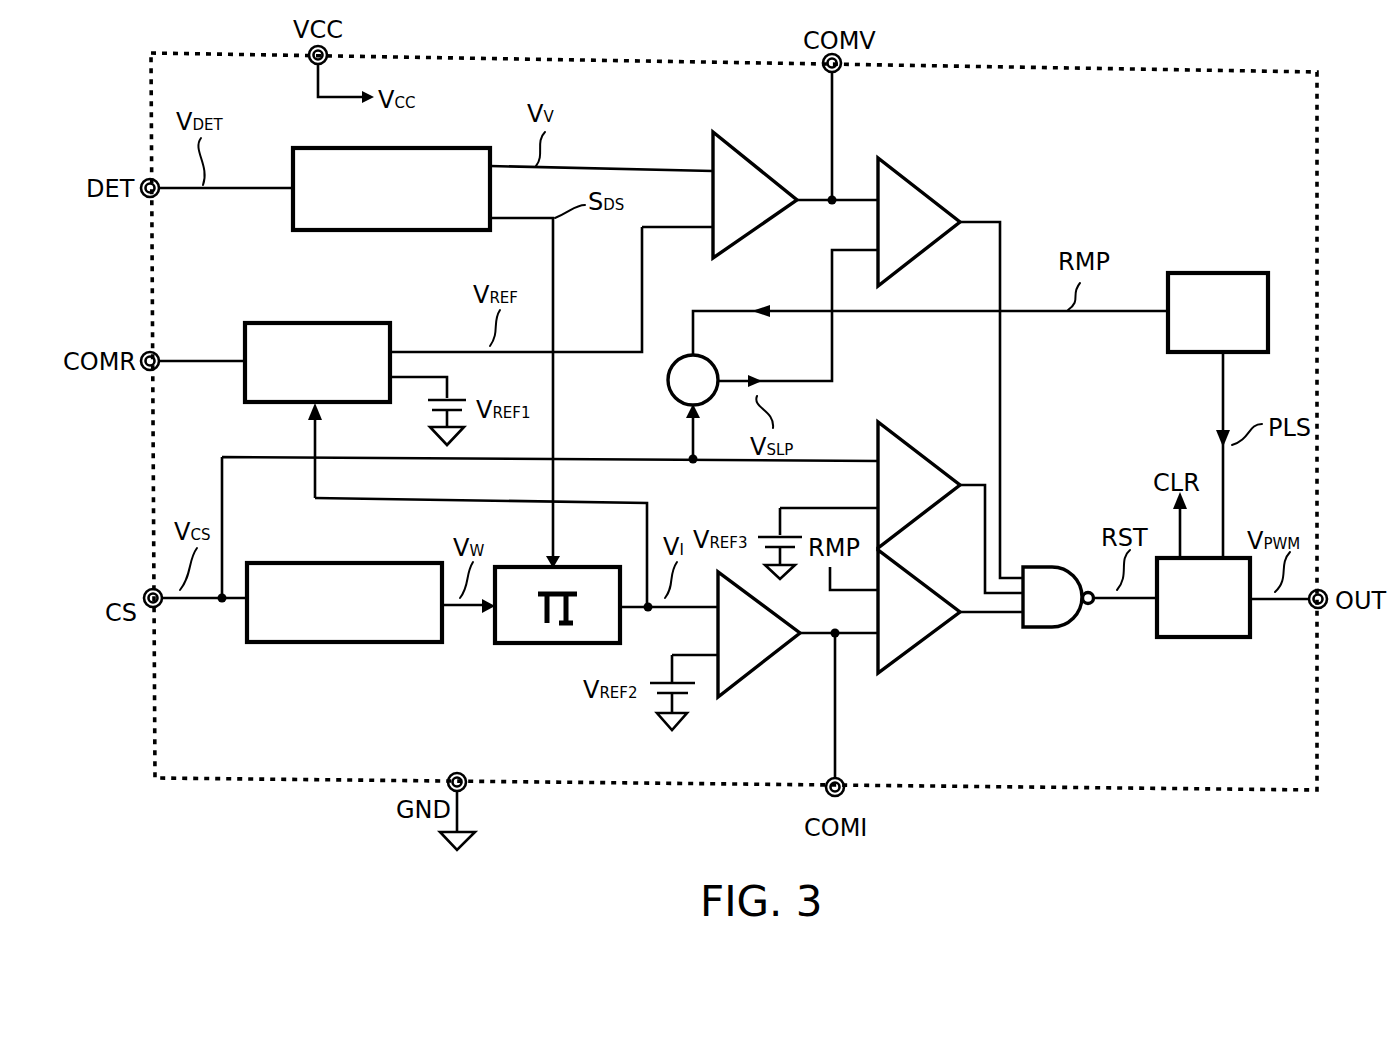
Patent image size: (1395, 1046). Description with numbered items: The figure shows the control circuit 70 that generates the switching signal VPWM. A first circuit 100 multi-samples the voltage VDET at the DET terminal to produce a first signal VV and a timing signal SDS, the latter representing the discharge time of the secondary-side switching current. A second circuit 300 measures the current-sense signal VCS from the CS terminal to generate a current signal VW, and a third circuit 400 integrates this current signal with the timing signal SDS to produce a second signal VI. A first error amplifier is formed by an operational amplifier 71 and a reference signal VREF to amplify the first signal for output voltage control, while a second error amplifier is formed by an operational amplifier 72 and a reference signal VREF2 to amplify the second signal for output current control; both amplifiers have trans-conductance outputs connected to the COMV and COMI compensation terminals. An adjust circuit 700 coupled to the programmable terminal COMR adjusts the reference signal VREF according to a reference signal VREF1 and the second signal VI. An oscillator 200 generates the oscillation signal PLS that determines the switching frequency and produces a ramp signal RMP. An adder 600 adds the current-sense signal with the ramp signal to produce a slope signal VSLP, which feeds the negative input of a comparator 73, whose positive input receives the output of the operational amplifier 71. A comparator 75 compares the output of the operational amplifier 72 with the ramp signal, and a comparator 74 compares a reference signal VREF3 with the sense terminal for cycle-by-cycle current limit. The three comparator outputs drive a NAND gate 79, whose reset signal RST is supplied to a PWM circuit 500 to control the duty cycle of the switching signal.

The control circuit 70 is at (1243, 69).
The operational amplifier 71 is at (758, 168).
The operational amplifier 72 is at (762, 665).
The comparator 73 is at (918, 190).
The comparator 74 is at (920, 455).
The comparator 75 is at (926, 640).
The NAND gate 79 is at (1048, 632).
The first circuit 100 is at (388, 232).
The oscillator 200 is at (1245, 273).
The second circuit 300 is at (335, 645).
The third circuit 400 is at (530, 648).
The PWM circuit 500 is at (1200, 640).
The adder 600 is at (667, 386).
The adjust circuit 700 is at (283, 322).